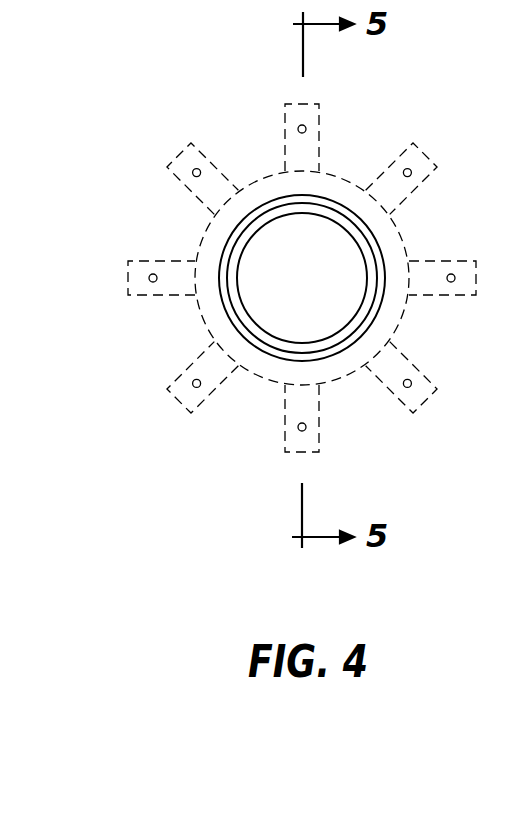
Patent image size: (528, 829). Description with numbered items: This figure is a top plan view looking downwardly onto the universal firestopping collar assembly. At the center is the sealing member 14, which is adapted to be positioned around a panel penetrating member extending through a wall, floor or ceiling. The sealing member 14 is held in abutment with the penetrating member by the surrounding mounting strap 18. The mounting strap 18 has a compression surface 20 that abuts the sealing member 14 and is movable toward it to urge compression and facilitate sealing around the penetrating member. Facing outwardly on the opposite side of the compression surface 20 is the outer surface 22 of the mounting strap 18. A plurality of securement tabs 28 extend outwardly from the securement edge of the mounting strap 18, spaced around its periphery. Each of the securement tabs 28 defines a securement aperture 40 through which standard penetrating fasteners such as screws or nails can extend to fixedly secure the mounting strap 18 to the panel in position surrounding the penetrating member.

The sealing member 14 is at (332, 343).
The mounting strap 18 is at (255, 372).
The compression surface 20 is at (370, 247).
The outer surface 22 is at (380, 315).
The securement tabs 28 is at (315, 152).
The securement apertures 40 is at (192, 174).